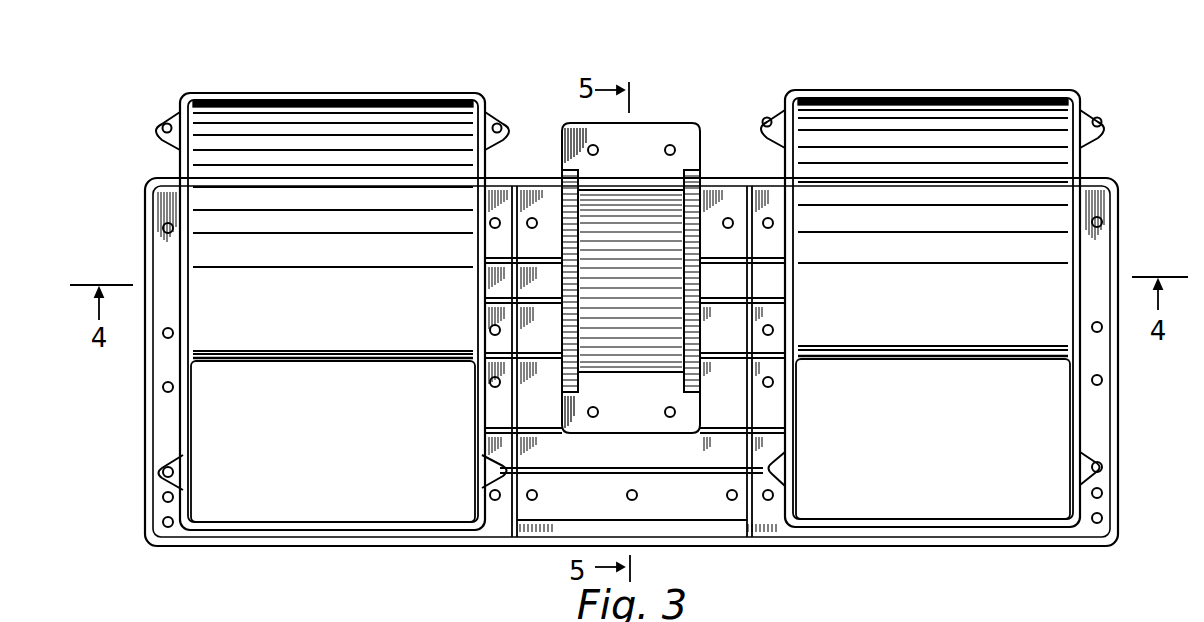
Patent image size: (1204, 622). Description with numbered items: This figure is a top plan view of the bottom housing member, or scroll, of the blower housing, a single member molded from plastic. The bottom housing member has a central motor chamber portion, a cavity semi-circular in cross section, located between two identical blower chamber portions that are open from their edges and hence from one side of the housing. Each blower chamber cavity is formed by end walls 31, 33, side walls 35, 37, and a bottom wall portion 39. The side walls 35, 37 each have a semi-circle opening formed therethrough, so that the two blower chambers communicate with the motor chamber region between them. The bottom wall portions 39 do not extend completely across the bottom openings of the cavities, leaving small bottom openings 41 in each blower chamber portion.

The end wall 31 is at (396, 92).
The end wall 33 is at (302, 532).
The side wall 35 is at (203, 127).
The side wall 37 is at (457, 130).
The bottom wall portion 39 is at (290, 163).
The small bottom opening 41 is at (372, 483).